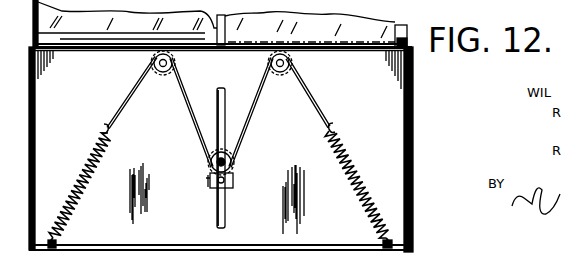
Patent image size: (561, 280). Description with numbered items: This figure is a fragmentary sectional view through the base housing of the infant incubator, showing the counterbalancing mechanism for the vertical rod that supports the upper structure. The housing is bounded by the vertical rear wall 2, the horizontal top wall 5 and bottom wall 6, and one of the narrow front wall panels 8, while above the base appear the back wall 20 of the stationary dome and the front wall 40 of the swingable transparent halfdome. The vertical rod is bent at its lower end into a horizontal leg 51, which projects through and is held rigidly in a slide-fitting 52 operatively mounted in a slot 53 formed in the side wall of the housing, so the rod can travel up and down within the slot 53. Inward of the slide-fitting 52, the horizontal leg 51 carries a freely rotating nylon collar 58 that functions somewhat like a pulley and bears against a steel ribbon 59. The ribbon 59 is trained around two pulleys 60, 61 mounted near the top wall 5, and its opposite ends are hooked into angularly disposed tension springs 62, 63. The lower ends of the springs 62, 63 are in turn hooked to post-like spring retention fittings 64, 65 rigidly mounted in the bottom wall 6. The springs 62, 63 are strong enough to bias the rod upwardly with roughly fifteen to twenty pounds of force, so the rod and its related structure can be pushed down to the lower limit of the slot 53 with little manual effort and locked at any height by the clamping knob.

The rear wall 2 is at (35, 136).
The top wall 5 is at (325, 50).
The bottom wall 6 is at (168, 245).
The front wall panel 8 is at (413, 156).
The back wall 20 is at (40, 14).
The front wall 40 is at (395, 29).
The horizontal leg 51 is at (235, 160).
The slide-fitting 52 is at (207, 182).
The slot 53 is at (225, 212).
The nylon collar 58 is at (234, 179).
The steel ribbon 59 is at (250, 120).
The pulley 60 is at (163, 74).
The pulley 61 is at (279, 73).
The tension spring 62 is at (83, 191).
The tension spring 63 is at (351, 148).
The spring retention fitting 64 is at (57, 238).
The spring retention fitting 65 is at (383, 241).